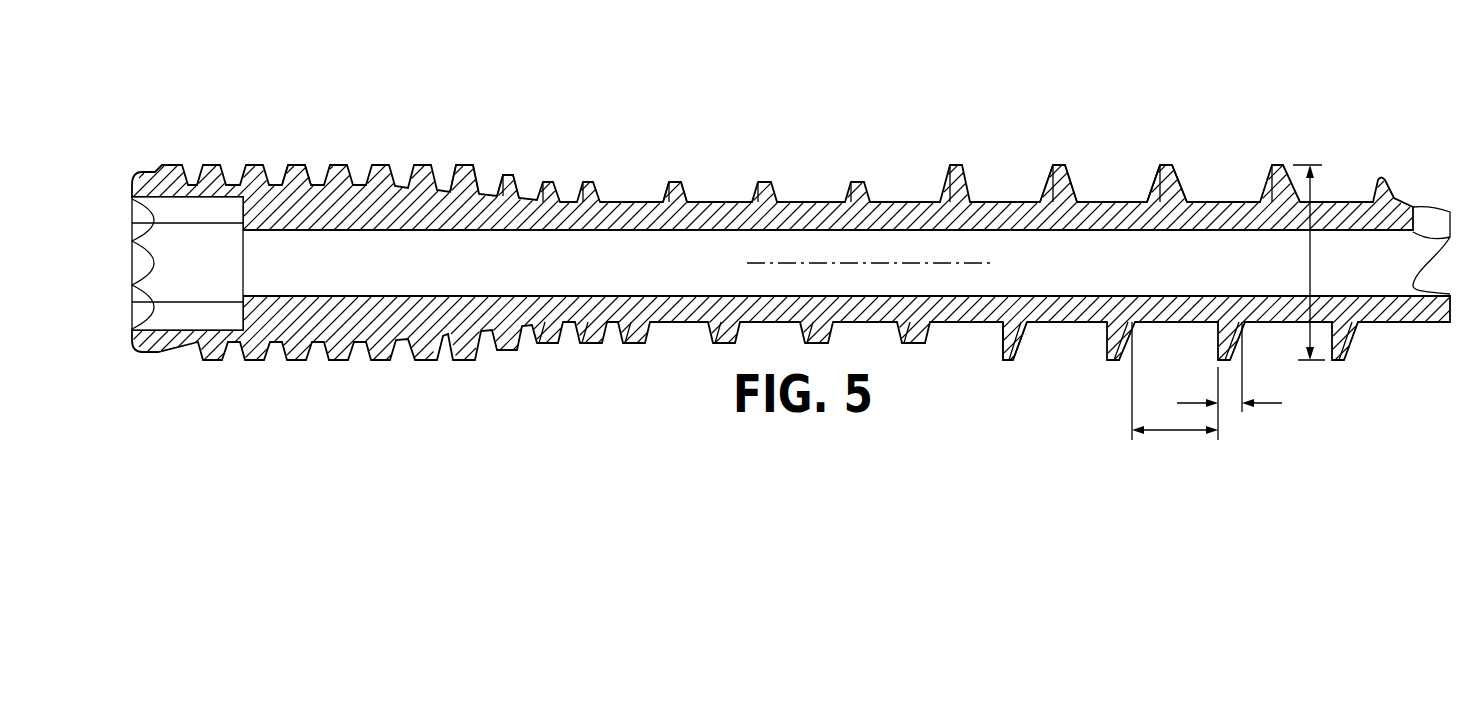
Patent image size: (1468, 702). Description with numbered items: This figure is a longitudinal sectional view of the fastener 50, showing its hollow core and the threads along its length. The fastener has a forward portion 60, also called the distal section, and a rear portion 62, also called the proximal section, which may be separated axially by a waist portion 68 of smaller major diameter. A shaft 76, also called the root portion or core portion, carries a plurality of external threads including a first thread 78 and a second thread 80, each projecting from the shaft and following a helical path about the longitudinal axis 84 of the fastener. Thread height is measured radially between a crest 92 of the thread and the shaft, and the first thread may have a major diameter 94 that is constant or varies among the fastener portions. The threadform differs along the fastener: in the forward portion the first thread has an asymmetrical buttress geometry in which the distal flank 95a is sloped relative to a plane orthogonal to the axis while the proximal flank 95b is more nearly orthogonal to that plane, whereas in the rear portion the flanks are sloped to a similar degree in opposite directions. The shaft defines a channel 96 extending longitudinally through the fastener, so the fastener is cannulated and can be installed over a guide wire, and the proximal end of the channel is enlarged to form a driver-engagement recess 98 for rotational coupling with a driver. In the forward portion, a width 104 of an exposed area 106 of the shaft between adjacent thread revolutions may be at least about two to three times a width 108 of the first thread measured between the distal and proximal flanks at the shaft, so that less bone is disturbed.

The fastener 50 is at (766, 246).
The forward portion 60 is at (1051, 155).
The rear portion 62 is at (290, 152).
The waist portion 68 is at (707, 172).
The shaft 76 is at (1063, 324).
The first thread 78 is at (461, 165).
The second thread 80 is at (506, 174).
The longitudinal axis 84 is at (777, 264).
The crest 92 is at (1166, 165).
The major diameter 94 is at (1312, 265).
The distal flank 95a is at (1182, 186).
The proximal flank 95b is at (1152, 186).
The channel 96 is at (622, 296).
The driver-engagement recess 98 is at (132, 320).
The width of exposed area 104 is at (1163, 432).
The exposed area 106 is at (1173, 324).
The width of first thread 108 is at (1266, 403).